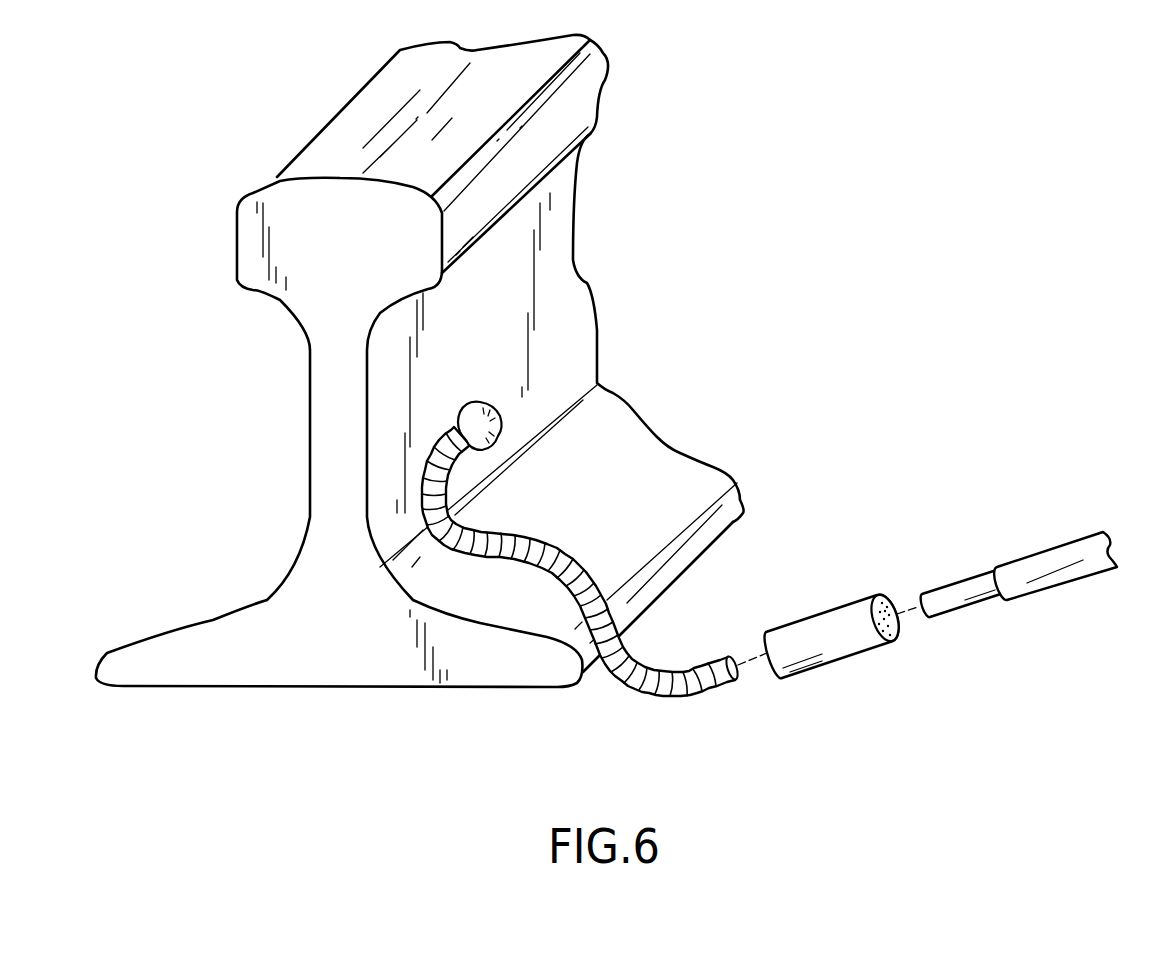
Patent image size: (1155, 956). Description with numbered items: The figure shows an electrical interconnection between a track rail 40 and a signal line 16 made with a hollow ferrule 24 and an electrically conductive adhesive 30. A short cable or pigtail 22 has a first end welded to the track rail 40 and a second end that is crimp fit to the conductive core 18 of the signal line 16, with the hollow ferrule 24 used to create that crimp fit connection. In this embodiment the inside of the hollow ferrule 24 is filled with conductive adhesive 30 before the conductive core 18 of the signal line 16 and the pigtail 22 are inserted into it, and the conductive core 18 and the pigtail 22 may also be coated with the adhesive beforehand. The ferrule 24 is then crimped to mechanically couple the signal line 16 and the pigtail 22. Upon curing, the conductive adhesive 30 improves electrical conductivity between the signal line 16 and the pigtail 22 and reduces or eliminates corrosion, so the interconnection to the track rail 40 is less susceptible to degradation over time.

The signal line 16 is at (1068, 552).
The conductive core 18 is at (965, 587).
The pigtail 22 is at (662, 692).
The hollow ferrule 24 is at (847, 600).
The conductive adhesive 30 is at (892, 630).
The track rail 40 is at (282, 192).